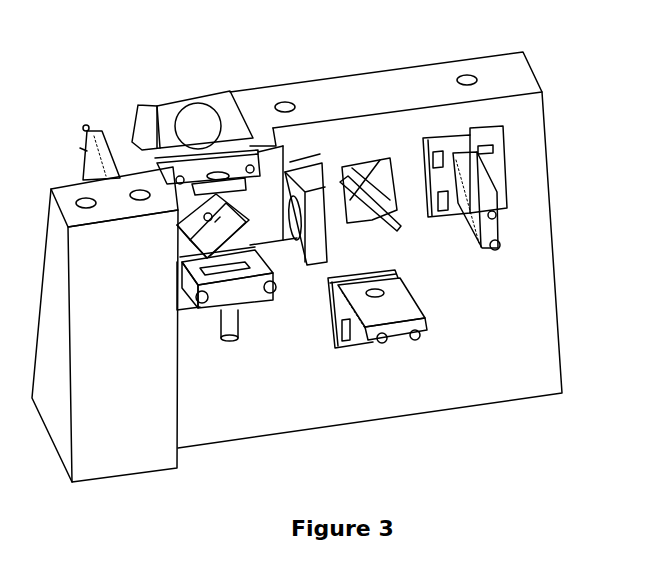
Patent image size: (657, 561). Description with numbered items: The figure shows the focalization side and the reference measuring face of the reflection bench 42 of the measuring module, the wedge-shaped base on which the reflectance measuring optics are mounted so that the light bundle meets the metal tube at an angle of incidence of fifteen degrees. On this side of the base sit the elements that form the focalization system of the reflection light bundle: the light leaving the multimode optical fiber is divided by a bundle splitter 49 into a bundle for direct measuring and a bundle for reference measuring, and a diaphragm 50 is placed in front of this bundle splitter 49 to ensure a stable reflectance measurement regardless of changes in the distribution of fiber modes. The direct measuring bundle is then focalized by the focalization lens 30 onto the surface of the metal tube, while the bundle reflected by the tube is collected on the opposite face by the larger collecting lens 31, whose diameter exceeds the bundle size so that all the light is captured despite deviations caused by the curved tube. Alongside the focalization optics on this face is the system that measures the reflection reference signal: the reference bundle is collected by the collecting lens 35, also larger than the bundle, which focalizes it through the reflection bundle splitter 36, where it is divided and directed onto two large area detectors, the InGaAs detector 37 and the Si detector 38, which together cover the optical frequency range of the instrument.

The focalization lens for the reflection channel 30 is at (200, 175).
The collecting lens for the direct measuring of the reflection channel 31 is at (194, 108).
The collecting lens for the reference measuring of the reflection channel 35 is at (318, 168).
The reflection bundle splitter for reference measuring 36 is at (372, 188).
The InGaAs detector for the reference measuring of the reflection channel 37 is at (460, 193).
The Si detector for the reference measuring of the reflection channel 38 is at (385, 293).
The reflection bench 42 is at (245, 393).
The bundle splitter 49 is at (182, 262).
The diaphragm 50 is at (190, 298).